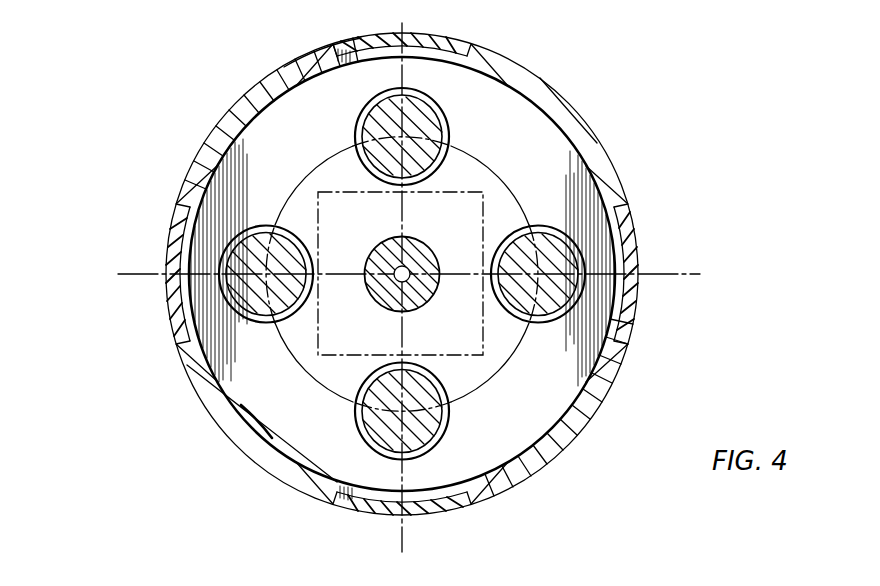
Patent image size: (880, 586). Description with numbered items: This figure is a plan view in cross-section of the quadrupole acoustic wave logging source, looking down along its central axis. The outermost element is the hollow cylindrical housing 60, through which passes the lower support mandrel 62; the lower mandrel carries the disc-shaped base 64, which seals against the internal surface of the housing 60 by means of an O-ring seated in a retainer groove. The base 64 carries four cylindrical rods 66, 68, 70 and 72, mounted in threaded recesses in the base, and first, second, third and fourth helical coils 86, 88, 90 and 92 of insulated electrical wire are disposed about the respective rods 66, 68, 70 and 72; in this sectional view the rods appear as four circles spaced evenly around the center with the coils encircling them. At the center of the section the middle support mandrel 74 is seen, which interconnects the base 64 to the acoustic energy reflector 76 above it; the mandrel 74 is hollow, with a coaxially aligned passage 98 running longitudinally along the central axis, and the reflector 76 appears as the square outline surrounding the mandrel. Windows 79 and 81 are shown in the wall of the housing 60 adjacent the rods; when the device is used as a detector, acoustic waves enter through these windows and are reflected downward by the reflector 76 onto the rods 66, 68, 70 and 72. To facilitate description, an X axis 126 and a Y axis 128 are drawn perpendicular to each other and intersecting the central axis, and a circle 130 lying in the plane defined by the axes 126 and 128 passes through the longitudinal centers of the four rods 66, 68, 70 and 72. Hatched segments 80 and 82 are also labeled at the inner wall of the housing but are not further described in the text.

The hollow cylindrical housing 60 is at (292, 177).
The lower support mandrel 62 is at (298, 1).
The disc-shaped base 64 is at (273, 428).
The cylindrical rod 66 is at (240, 290).
The cylindrical rod 68 is at (427, 430).
The cylindrical rod 70 is at (565, 257).
The cylindrical rod 72 is at (380, 115).
The middle support mandrel 74 is at (432, 299).
The acoustic energy reflector 76 is at (485, 196).
The window 79 is at (170, 303).
The bottom pad 80 is at (345, 508).
The window 81 is at (633, 317).
The top pad 82 is at (365, 37).
The first helical coil 86 is at (262, 230).
The second helical coil 88 is at (357, 428).
The third helical coil 90 is at (555, 320).
The fourth helical coil 92 is at (445, 122).
The passage 98 is at (397, 280).
The X axis 126 is at (137, 275).
The Y axis 128 is at (403, 23).
The circle 130 is at (525, 210).